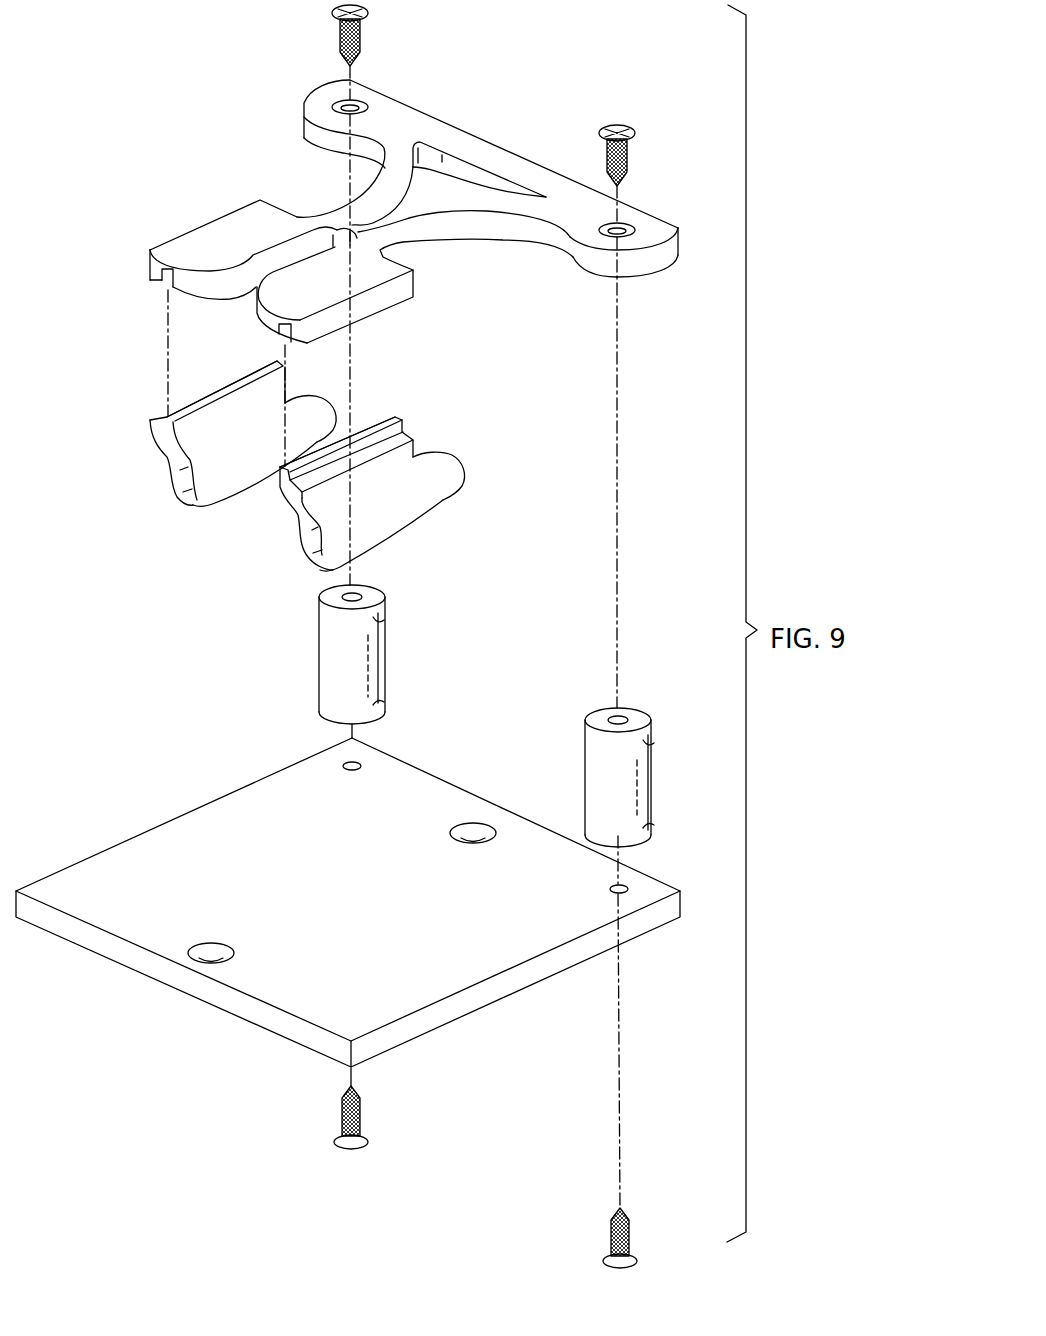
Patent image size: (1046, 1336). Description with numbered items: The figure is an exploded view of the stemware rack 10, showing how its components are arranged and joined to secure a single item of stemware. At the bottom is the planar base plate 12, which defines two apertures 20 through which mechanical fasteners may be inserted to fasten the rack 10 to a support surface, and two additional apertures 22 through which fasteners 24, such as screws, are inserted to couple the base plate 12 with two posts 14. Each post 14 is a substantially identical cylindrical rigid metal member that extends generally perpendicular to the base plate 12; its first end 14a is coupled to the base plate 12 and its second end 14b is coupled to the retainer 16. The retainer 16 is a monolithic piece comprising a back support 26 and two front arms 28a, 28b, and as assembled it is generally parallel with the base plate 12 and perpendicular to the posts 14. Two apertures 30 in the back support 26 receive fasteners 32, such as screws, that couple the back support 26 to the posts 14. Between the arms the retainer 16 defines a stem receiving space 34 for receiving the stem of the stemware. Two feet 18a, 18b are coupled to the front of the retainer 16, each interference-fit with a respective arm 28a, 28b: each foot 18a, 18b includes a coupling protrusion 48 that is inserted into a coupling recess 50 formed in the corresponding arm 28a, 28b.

The stemware rack 10 is at (133, 32).
The base plate 12 is at (381, 965).
The post 14 is at (326, 662).
The first end 14a is at (382, 700).
The second end 14b is at (382, 624).
The retainer 16 is at (541, 166).
The foot 18a is at (245, 452).
The foot 18b is at (383, 515).
The aperture 20 is at (211, 941).
The aperture 22 is at (356, 772).
The fastener 24 is at (343, 1112).
The back support 26 is at (460, 131).
The front arm 28a is at (256, 211).
The front arm 28b is at (388, 273).
The aperture 30 is at (341, 96).
The fastener 32 is at (363, 32).
The stem receiving space 34 is at (301, 242).
The coupling protrusion 48 is at (168, 415).
The coupling recess 50 is at (164, 290).